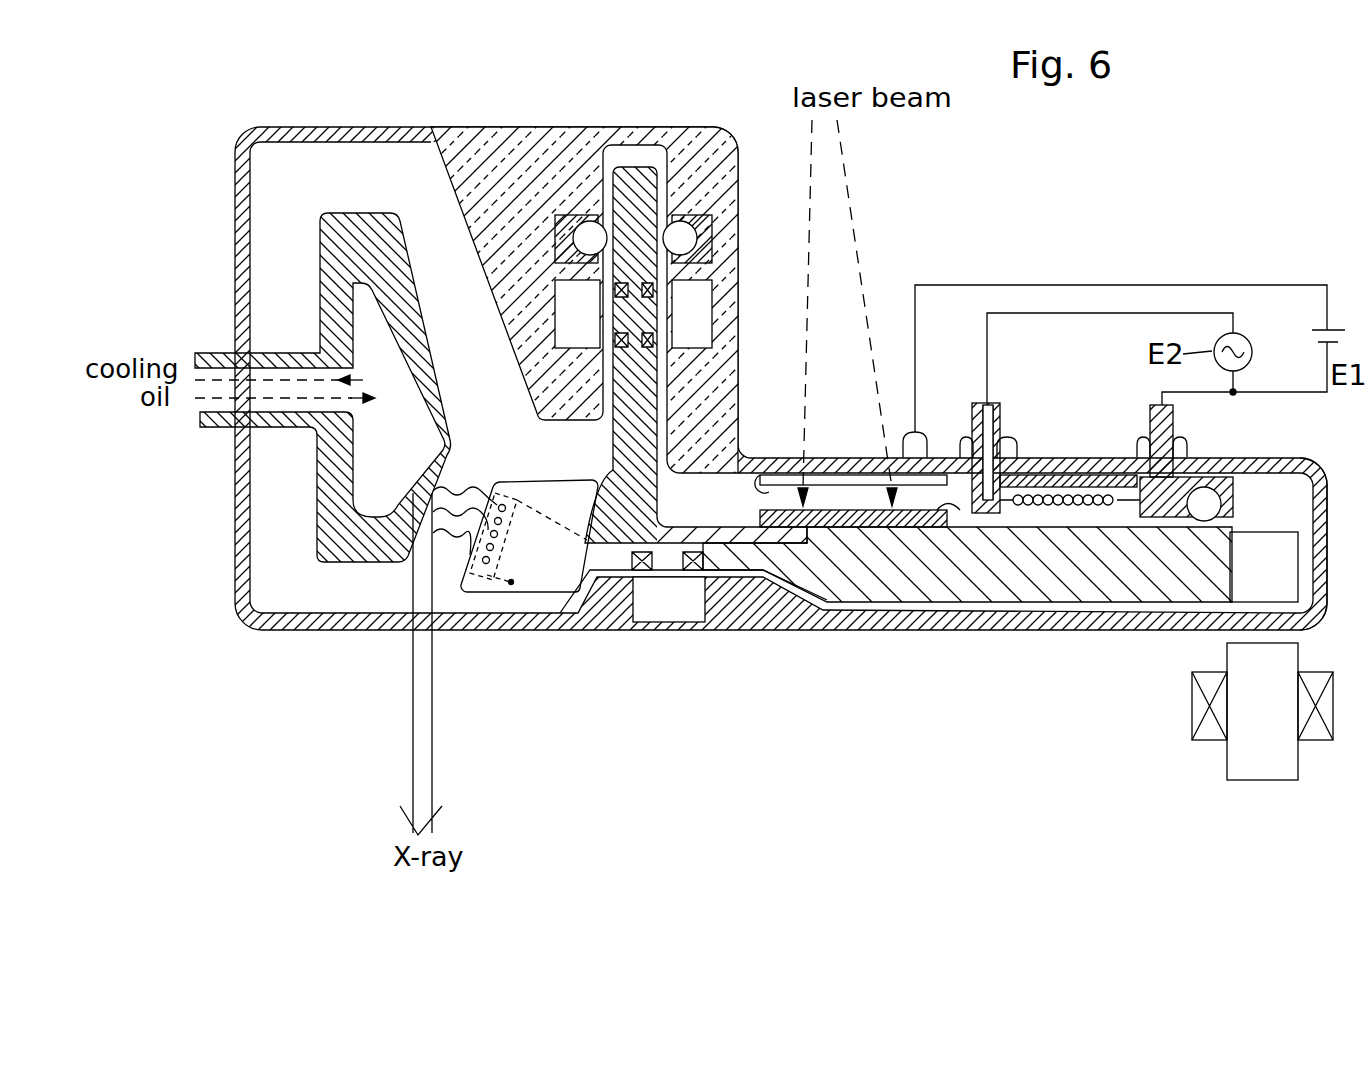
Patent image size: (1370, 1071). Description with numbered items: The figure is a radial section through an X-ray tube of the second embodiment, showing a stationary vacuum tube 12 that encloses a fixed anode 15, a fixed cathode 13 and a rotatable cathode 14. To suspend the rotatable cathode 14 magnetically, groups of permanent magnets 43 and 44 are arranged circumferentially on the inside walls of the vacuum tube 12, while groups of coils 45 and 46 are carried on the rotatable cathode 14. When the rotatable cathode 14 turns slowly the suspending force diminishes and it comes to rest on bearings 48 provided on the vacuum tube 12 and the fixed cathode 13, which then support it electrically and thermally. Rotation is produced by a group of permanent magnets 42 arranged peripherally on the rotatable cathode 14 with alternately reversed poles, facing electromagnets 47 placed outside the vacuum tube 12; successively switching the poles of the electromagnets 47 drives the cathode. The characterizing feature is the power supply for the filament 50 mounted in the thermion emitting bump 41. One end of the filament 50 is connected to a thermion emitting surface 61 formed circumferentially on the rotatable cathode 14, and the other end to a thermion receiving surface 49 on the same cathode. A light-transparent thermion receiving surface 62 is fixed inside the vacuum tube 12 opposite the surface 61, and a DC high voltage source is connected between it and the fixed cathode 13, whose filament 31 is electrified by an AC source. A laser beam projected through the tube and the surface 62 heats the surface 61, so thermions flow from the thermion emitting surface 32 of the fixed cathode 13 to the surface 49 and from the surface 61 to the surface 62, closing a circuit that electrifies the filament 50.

The stationary vacuum tube 12 is at (501, 111).
The fixed cathode 13 is at (1248, 506).
The rotatable cathode 14 is at (569, 600).
The fixed anode 15 is at (331, 567).
The filament 31 is at (1042, 485).
The thermion emitting surface 32 is at (1102, 517).
The thermion emitting bump 41 is at (473, 594).
The permanent magnets 42 is at (1300, 572).
The permanent magnets 43 is at (676, 623).
The permanent magnets 44 is at (547, 329).
The coils 45 is at (707, 568).
The coils 46 is at (614, 418).
The electromagnets 47 is at (1225, 757).
The bearings 48 is at (682, 232).
The thermion receiving surface 49 is at (1053, 532).
The filament 50 is at (491, 487).
The thermion emitting surface 61 is at (950, 512).
The thermion receiving surface 62 is at (745, 472).